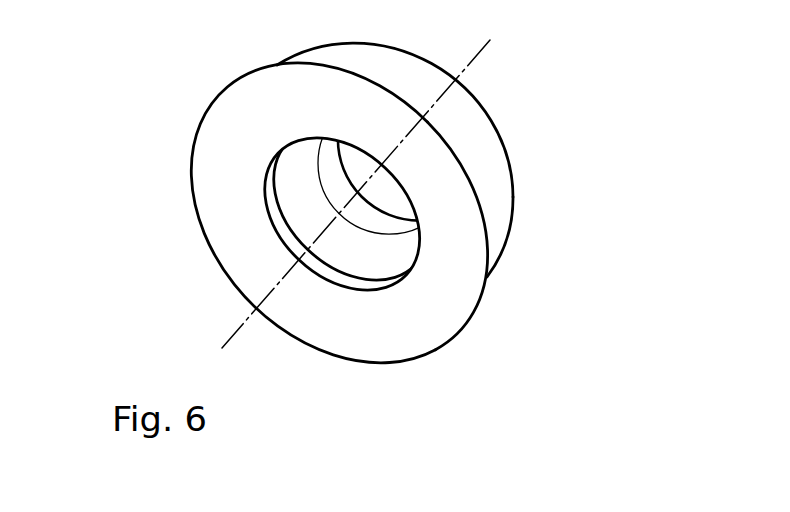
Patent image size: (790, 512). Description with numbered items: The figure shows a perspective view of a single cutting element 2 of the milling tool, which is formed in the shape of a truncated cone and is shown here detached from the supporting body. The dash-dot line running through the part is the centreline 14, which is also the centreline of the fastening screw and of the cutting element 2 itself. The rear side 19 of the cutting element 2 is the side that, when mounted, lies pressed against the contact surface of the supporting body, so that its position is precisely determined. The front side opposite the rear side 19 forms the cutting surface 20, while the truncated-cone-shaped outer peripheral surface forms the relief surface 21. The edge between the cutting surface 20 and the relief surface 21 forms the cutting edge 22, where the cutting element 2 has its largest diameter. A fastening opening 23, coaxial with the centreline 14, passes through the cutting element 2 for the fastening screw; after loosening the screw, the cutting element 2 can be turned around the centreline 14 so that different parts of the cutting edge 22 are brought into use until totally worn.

The cutting element 2 is at (198, 98).
The centreline 14 is at (265, 299).
The rear side 19 is at (505, 145).
The cutting surface 20 is at (215, 227).
The relief surface 21 is at (500, 187).
The cutting edge 22 is at (487, 247).
The fastening opening 23 is at (290, 202).